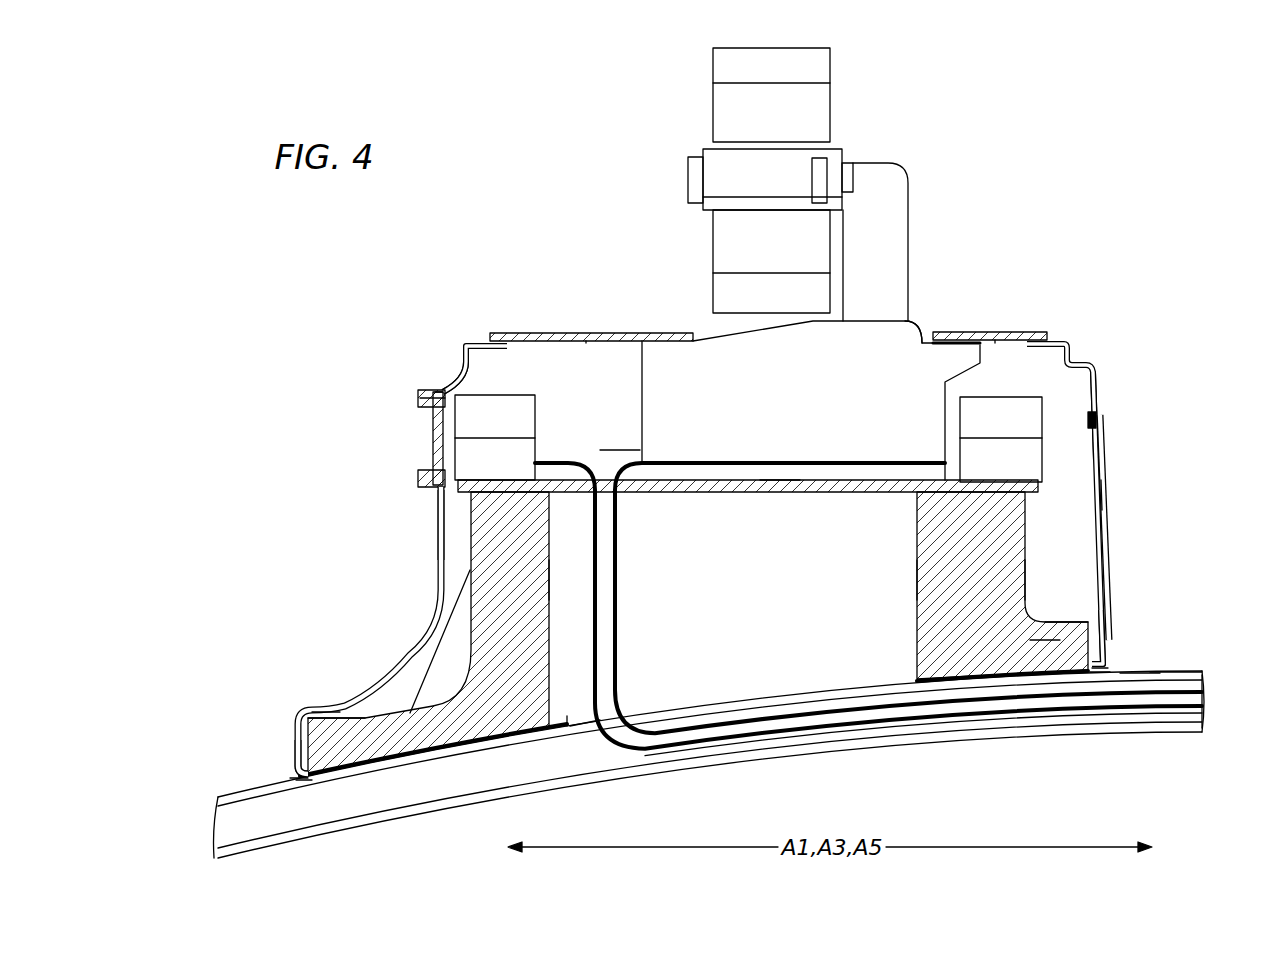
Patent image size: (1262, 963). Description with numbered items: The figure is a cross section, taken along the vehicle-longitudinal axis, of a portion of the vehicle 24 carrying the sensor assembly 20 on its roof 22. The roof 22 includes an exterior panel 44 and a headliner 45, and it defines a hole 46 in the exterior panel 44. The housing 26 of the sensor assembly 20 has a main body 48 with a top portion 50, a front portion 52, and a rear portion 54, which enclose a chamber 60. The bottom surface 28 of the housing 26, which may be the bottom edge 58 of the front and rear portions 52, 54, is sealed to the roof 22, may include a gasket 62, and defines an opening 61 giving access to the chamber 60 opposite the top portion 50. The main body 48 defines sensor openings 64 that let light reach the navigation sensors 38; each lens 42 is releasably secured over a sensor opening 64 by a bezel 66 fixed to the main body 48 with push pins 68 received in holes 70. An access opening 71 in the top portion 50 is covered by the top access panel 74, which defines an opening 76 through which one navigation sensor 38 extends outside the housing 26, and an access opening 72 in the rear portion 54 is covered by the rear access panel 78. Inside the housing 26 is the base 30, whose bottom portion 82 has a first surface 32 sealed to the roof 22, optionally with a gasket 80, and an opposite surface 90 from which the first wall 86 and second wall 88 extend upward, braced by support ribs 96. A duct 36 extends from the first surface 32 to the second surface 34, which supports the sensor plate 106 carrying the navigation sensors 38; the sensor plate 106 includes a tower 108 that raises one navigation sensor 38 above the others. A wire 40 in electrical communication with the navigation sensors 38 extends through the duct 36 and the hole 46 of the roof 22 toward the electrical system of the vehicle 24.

The sensor assembly 20 is at (300, 381).
The roof 22 is at (1178, 672).
The vehicle 24 is at (1205, 688).
The housing 26 is at (432, 597).
The bottom surface 28 is at (302, 786).
The base 30 is at (535, 614).
The first surface 32 is at (517, 738).
The second surface 34 is at (515, 493).
The duct 36 is at (700, 650).
The navigation sensor 38 is at (738, 250).
The wire 40 is at (592, 672).
The lens 42 is at (436, 437).
The exterior panel 44 is at (1140, 672).
The headliner 45 is at (680, 770).
The hole 46 is at (587, 727).
The main body 48 is at (470, 376).
The top portion 50 is at (480, 343).
The front portion 52 is at (439, 542).
The rear portion 54 is at (1098, 388).
The bottom edge 58 is at (295, 768).
The chamber 60 is at (583, 443).
The opening 61 is at (577, 722).
The gasket 62 is at (290, 778).
The sensor opening 64 is at (443, 457).
The bezel 66 is at (438, 396).
The push pin 68 is at (423, 397).
The hole 70 is at (441, 390).
The access opening 71 is at (588, 345).
The access opening 72 is at (1097, 497).
The top access panel 74 is at (548, 333).
The opening 76 is at (700, 340).
The rear access panel 78 is at (1107, 492).
The gasket 80 is at (430, 752).
The bottom portion 82 is at (320, 717).
The first wall 86 is at (535, 580).
The second wall 88 is at (920, 582).
The surface 90 is at (335, 740).
The support rib 96 is at (442, 665).
The sensor plate 106 is at (782, 490).
The tower 108 is at (920, 320).